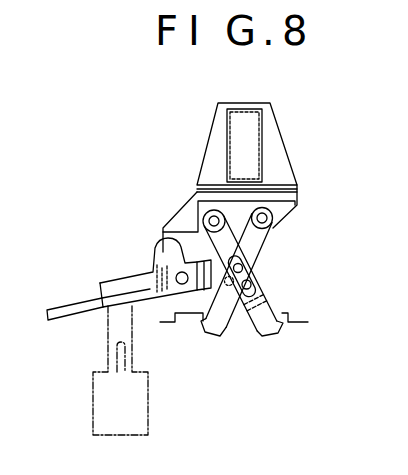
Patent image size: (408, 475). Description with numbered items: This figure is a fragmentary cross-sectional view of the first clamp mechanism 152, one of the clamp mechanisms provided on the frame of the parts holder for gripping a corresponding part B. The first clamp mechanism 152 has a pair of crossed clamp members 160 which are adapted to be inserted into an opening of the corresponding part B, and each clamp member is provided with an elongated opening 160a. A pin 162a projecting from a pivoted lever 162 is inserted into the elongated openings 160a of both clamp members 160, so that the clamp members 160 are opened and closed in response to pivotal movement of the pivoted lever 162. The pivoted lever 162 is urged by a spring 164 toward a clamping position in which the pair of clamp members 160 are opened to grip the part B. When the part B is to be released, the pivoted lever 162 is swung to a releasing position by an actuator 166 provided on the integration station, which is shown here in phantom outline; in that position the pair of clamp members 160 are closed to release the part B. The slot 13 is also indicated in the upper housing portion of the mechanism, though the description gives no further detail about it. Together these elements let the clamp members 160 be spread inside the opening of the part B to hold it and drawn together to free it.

The first clamp mechanism 152 is at (189, 118).
The slot 13 is at (264, 137).
The spring 164 is at (200, 195).
The pivoted lever 162 is at (137, 275).
The pin 162a is at (262, 257).
The clamp members 160 is at (208, 338).
The elongated openings 160a is at (250, 290).
The part B is at (288, 311).
The actuator 166 is at (160, 416).